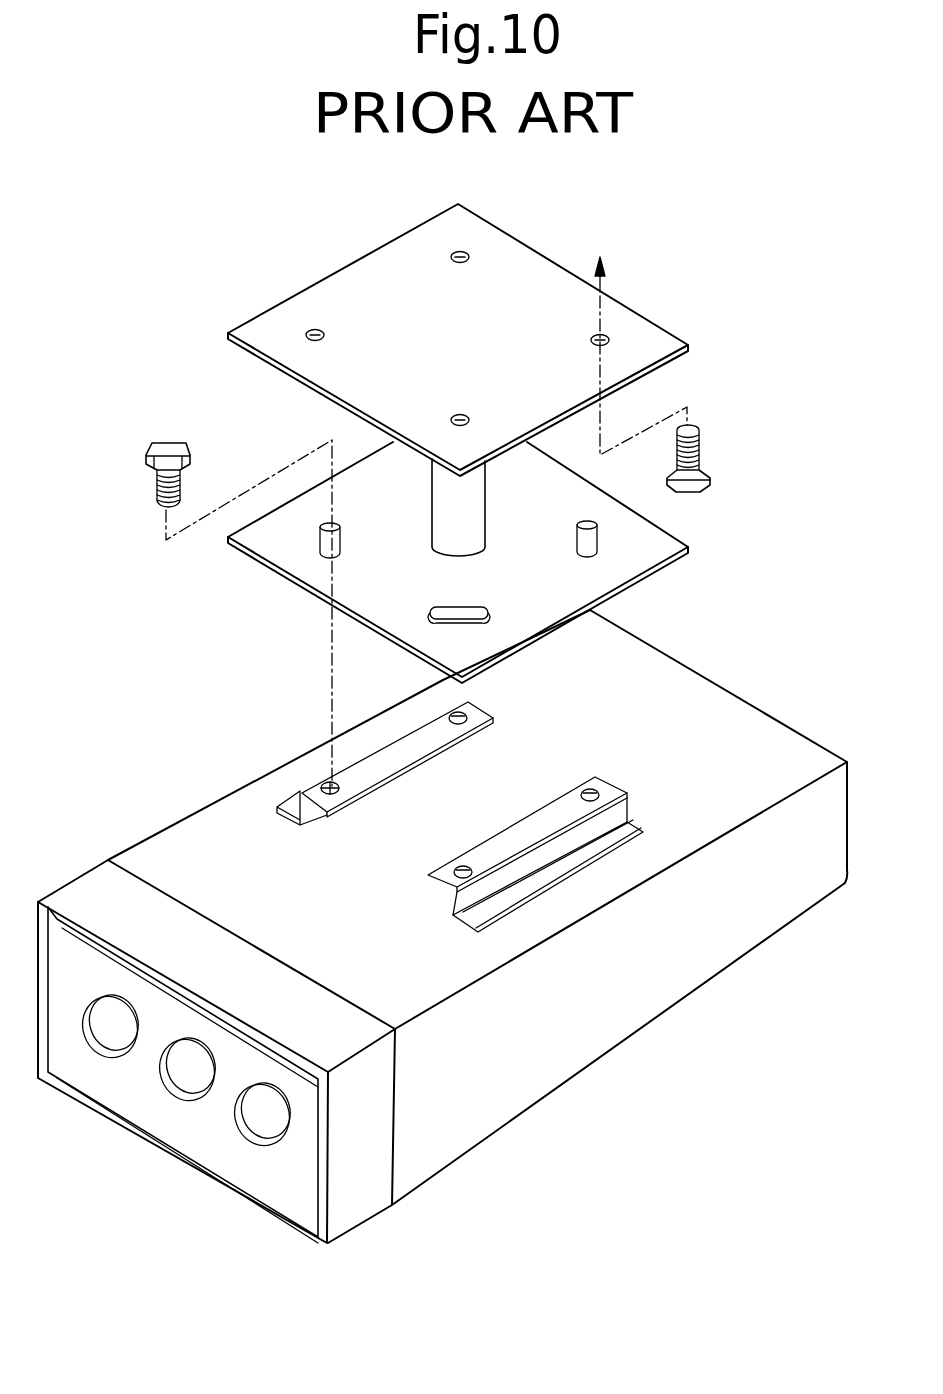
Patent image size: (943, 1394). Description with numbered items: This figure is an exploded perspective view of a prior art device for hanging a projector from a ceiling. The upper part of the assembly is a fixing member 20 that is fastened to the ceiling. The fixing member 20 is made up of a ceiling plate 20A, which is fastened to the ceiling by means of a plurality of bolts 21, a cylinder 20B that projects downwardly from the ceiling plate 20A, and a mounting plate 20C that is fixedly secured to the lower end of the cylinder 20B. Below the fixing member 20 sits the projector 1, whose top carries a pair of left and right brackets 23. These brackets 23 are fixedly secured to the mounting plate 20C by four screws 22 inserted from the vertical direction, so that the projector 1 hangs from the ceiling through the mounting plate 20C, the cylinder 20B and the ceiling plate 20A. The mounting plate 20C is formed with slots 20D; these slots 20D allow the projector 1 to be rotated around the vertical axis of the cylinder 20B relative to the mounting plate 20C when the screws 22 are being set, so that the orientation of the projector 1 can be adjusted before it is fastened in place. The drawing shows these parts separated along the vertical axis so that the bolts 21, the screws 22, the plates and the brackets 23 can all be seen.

The projector 1 is at (711, 953).
The fixing member 20 is at (657, 307).
The ceiling plate 20A is at (500, 267).
The cylinder 20B is at (487, 523).
The mounting plate 20C is at (647, 558).
The slots 20D is at (323, 543).
The bolts 21 is at (712, 485).
The screws 22 is at (172, 453).
The brackets 23 is at (482, 848).